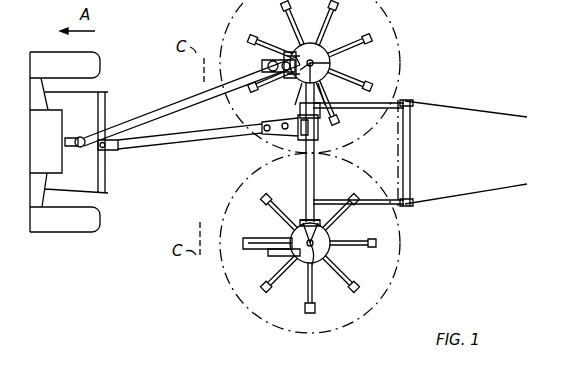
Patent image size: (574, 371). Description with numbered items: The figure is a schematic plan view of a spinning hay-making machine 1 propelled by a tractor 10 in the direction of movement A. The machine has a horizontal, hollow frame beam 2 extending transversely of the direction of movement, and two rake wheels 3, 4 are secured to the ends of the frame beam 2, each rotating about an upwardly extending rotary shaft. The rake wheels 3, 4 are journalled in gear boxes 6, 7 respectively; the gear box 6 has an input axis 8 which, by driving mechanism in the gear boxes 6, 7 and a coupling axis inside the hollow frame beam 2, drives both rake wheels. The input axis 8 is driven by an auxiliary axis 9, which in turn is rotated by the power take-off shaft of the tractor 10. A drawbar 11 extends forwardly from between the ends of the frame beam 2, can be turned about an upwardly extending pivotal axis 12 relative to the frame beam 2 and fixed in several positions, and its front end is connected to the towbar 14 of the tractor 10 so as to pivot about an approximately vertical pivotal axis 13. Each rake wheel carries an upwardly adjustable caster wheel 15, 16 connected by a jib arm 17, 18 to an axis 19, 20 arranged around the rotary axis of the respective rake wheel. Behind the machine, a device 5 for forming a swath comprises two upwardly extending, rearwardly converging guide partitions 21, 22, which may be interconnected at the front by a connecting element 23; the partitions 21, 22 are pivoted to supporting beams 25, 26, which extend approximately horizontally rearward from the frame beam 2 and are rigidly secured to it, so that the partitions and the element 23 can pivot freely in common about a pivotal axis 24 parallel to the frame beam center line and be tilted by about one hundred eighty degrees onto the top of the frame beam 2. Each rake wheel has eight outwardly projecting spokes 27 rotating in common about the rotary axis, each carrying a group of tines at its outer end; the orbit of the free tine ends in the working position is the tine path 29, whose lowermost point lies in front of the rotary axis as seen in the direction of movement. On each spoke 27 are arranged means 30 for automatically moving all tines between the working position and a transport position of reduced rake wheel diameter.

The hay making machine 1 is at (238, 184).
The frame beam 2 is at (300, 165).
The rake wheel 3 is at (402, 65).
The rake wheel 4 is at (403, 258).
The device for the formation of a swath 5 is at (490, 108).
The gear box 6 is at (345, 64).
The gear box 7 is at (300, 265).
The input axis 8 is at (270, 48).
The auxiliary axis 9 is at (147, 112).
The tractor 10 is at (99, 56).
The drawbar 11 is at (180, 142).
The pivotal axis 12 is at (258, 135).
The pivotal axis 13 is at (109, 150).
The towbar 14 is at (100, 185).
The caster wheel 15 is at (225, 42).
The caster wheel 16 is at (255, 238).
The jib arm 17 is at (290, 52).
The jib arm 18 is at (262, 258).
The axis 19 is at (312, 55).
The axis 20 is at (318, 258).
The guide partition 21 is at (443, 112).
The guide partition 22 is at (502, 190).
The connecting element 23 is at (412, 159).
The pivotal axis 24 is at (400, 175).
The supporting beam 25 is at (343, 112).
The supporting beam 26 is at (355, 179).
The spoke 27 is at (368, 40).
The tine path 29 is at (258, 334).
The means for adjusting the tines 30 is at (308, 320).